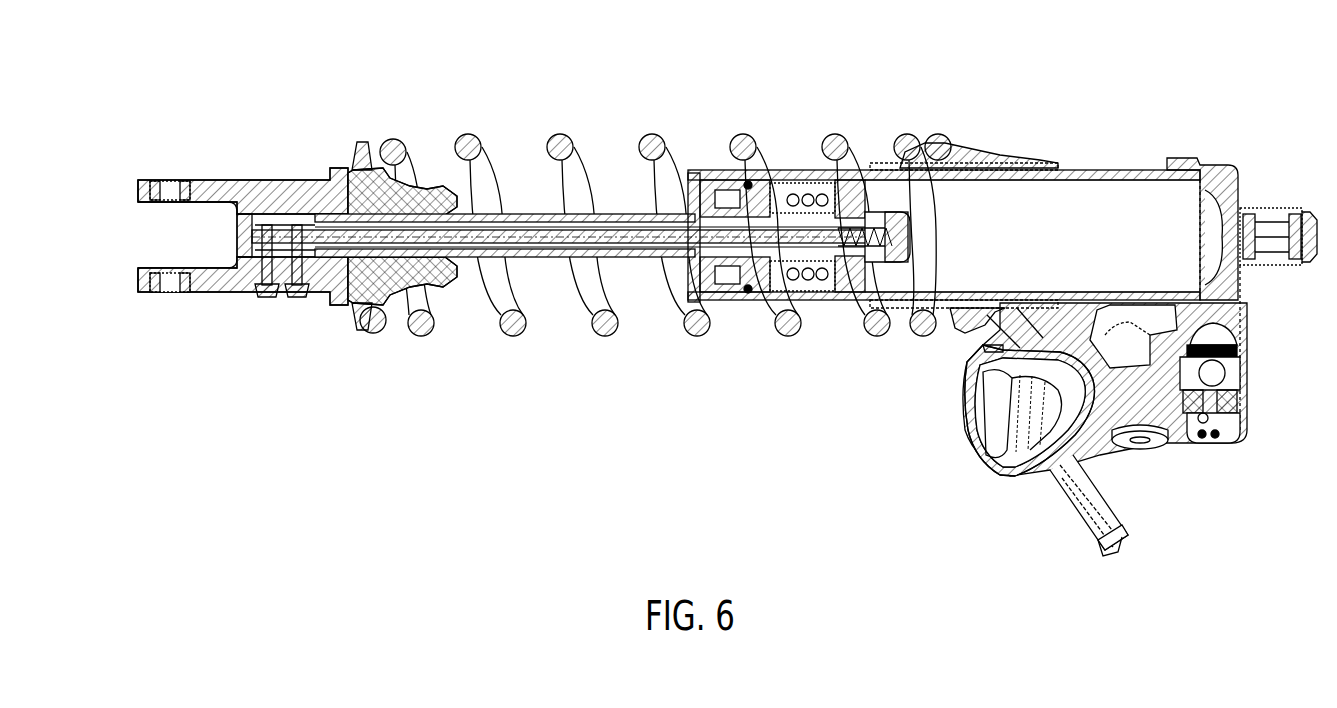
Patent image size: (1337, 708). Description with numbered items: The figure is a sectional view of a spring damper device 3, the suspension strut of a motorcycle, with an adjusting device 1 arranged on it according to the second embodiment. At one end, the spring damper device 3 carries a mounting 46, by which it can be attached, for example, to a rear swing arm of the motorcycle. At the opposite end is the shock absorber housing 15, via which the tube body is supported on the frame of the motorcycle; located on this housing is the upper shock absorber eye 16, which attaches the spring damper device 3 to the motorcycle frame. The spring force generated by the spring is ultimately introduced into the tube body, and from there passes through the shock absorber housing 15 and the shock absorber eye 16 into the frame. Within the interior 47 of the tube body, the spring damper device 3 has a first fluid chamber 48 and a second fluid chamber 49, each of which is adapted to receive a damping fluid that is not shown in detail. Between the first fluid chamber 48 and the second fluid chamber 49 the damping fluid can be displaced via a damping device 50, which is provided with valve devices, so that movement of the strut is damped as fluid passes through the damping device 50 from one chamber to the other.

The adjusting device 1 is at (1052, 64).
The spring damper device 3 is at (284, 360).
The shock absorber housing 15 is at (1232, 186).
The shock absorber eye 16 is at (1285, 260).
The mounting 46 is at (152, 181).
The interior 47 is at (889, 353).
The first fluid chamber 48 is at (1120, 190).
The second fluid chamber 49 is at (752, 353).
The damping device 50 is at (758, 110).